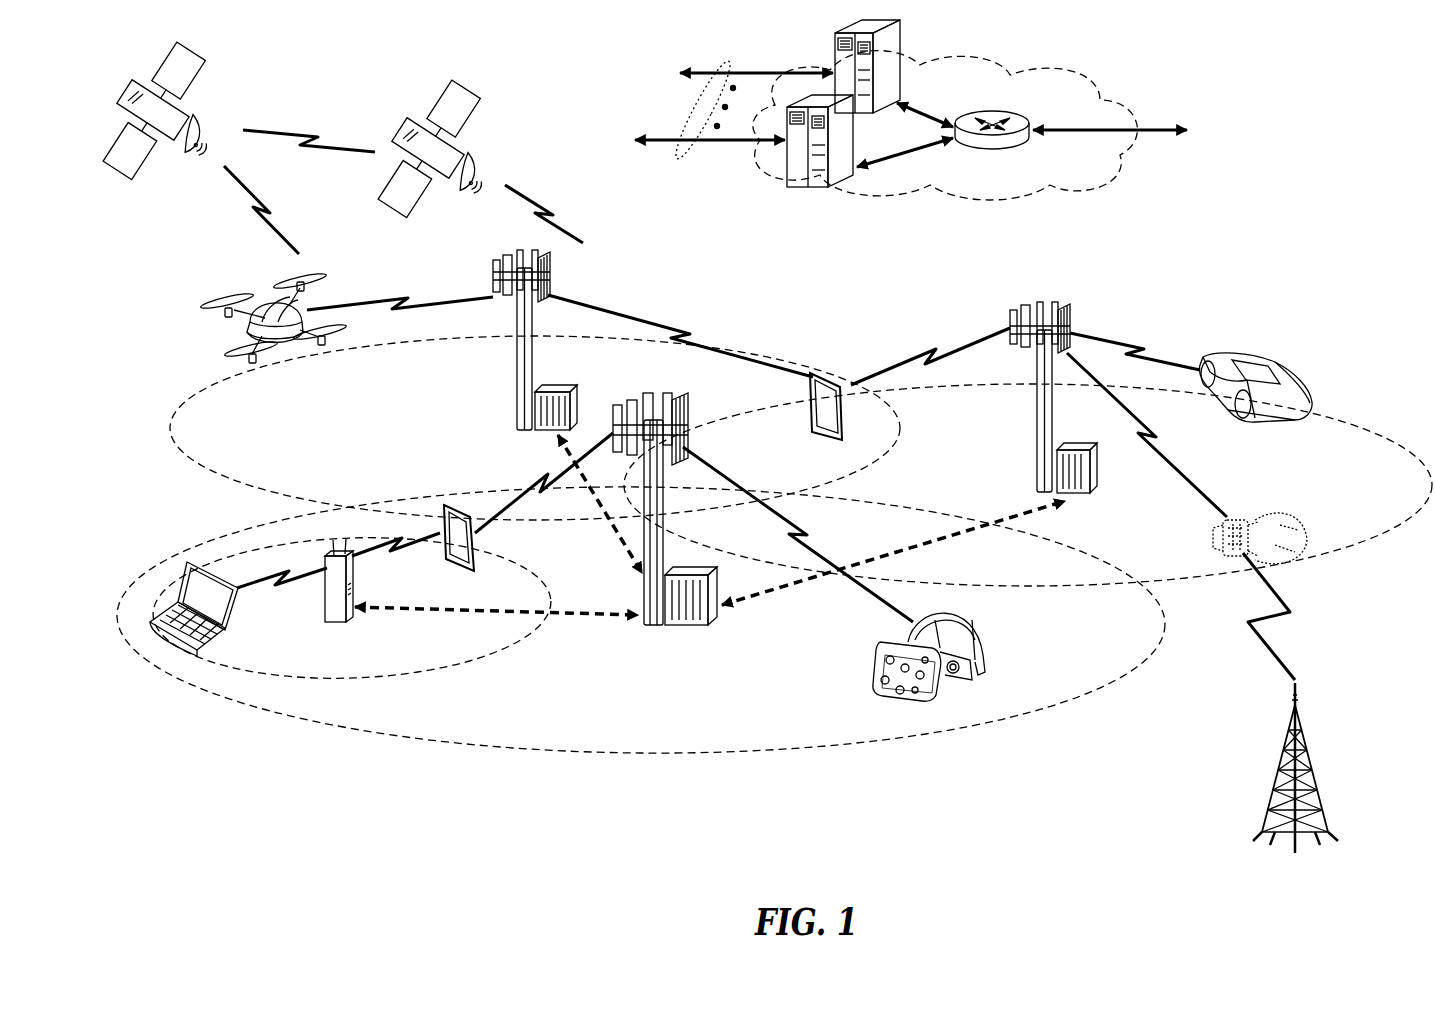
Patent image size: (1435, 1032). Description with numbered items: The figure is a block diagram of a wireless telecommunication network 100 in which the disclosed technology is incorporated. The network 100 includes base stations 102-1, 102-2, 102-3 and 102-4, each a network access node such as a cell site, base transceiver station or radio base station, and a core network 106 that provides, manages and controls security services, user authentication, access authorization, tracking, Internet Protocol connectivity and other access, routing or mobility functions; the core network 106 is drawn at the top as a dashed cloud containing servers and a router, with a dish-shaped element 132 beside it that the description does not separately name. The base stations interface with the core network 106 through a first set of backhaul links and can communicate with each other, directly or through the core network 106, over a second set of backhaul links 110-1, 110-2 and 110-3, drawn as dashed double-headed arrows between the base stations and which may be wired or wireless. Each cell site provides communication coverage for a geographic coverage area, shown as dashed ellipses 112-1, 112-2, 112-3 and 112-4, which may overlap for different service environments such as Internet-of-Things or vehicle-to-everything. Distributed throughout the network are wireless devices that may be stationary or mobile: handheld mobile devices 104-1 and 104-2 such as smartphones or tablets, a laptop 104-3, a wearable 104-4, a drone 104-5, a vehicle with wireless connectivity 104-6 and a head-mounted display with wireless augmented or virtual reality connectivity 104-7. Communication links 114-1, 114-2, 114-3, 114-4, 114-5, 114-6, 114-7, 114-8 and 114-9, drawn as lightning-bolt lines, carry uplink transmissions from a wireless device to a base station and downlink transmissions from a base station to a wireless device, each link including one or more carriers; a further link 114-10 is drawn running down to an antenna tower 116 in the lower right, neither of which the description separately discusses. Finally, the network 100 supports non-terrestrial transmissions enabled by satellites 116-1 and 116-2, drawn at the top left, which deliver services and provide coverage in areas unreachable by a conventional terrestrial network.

The wireless telecommunication network 100 is at (1330, 115).
The base station 102-1 is at (653, 625).
The base station 102-2 is at (513, 380).
The base station 102-3 is at (1037, 413).
The base station 102-4 is at (327, 613).
The handheld mobile device 104-1 is at (475, 553).
The handheld mobile device 104-2 is at (810, 408).
The laptop 104-3 is at (172, 647).
The wearable 104-4 is at (1275, 492).
The drone 104-5 is at (283, 343).
The vehicle with wireless connectivity 104-6 is at (1277, 363).
The head-mounted display 104-7 is at (993, 640).
The core network 106 is at (1020, 195).
The backhaul link 110-1 is at (390, 608).
The backhaul link 110-2 is at (960, 533).
The backhaul link 110-3 is at (617, 532).
The geographic coverage area 112-1 is at (580, 755).
The geographic coverage area 112-2 is at (458, 663).
The geographic coverage area 112-3 is at (228, 482).
The geographic coverage area 112-4 is at (1332, 410).
The communication link 114-1 is at (813, 533).
The communication link 114-2 is at (543, 480).
The communication link 114-3 is at (252, 583).
The communication link 114-4 is at (402, 552).
The communication link 114-5 is at (407, 297).
The communication link 114-6 is at (930, 350).
The communication link 114-7 is at (683, 332).
The communication link 114-8 is at (1150, 450).
The communication link 114-9 is at (1140, 350).
The communication link 114-10 is at (1277, 622).
The antenna tower 116 is at (1310, 742).
The satellite 116-1 is at (208, 120).
The satellite 116-2 is at (468, 160).
The satellite dish / ground station antenna 132 is at (700, 160).